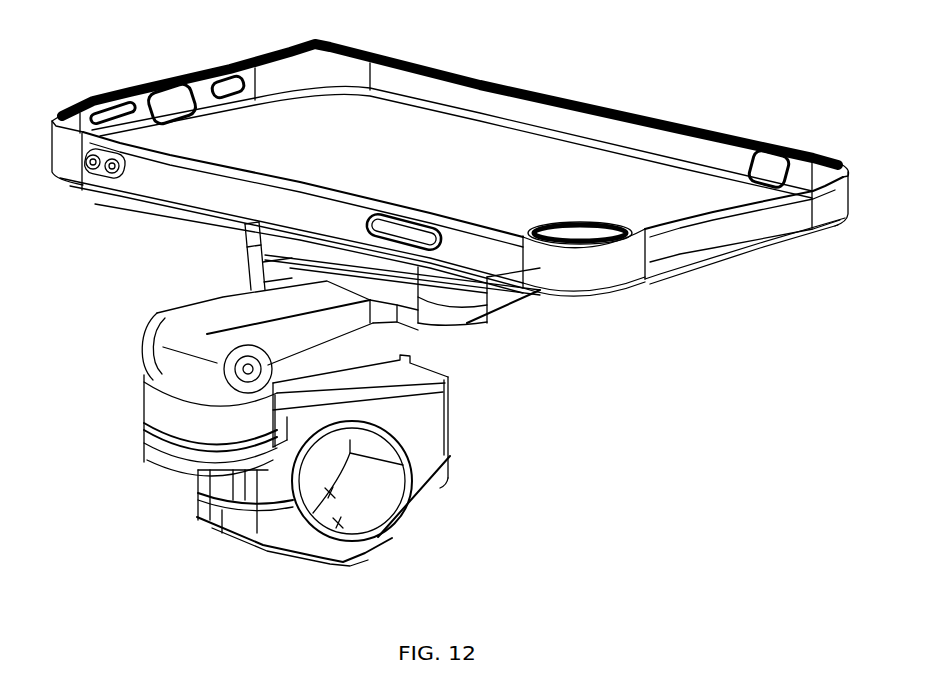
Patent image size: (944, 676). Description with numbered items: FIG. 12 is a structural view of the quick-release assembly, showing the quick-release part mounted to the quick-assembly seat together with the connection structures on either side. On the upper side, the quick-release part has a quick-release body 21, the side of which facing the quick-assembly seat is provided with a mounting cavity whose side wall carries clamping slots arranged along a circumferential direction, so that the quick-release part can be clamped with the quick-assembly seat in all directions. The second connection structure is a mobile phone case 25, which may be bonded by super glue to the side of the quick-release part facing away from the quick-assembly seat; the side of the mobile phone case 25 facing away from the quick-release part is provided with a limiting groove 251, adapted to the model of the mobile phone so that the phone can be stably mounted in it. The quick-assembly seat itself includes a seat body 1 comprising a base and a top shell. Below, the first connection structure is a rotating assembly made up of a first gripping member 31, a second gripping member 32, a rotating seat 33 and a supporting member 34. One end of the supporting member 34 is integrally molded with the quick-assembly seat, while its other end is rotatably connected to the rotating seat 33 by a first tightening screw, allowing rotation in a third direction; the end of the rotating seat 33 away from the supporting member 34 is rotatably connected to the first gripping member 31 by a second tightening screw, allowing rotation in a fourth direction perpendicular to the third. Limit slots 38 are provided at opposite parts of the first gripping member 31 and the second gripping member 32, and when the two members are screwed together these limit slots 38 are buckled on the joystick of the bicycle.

The seat body 1 is at (312, 420).
The quick-release body 21 is at (243, 235).
The mobile phone case 25 is at (752, 238).
The limiting groove 251 is at (500, 153).
The first gripping member 31 is at (427, 410).
The second gripping member 32 is at (412, 497).
The rotating seat 33 is at (160, 410).
The supporting member 34 is at (217, 305).
The limit slots 38 is at (375, 577).